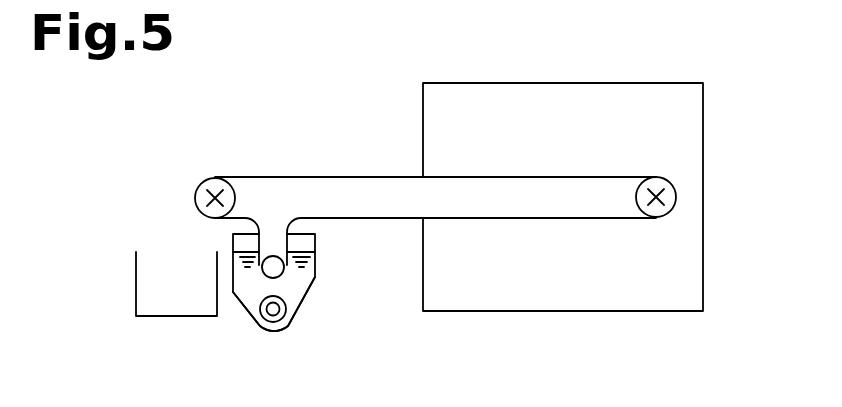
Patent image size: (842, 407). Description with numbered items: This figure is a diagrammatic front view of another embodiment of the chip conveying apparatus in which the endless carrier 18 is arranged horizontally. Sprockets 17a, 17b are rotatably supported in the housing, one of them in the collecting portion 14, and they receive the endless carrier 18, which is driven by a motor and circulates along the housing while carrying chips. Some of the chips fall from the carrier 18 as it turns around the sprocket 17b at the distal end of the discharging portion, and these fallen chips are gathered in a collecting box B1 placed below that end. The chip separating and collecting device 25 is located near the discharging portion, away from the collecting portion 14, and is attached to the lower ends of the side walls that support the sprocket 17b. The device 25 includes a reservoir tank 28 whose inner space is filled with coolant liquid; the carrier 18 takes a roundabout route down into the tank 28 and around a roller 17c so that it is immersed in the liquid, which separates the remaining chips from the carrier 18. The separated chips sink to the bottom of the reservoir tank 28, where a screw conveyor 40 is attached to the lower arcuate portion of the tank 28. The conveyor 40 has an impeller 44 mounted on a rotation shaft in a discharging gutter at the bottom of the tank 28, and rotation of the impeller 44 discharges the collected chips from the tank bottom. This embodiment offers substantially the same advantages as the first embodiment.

The collecting portion 14 is at (591, 176).
The endless carrier 18 is at (358, 177).
The sprocket 17a is at (677, 194).
The sprocket 17b is at (222, 178).
The roller 17c is at (284, 268).
The reservoir tank 28 is at (317, 282).
The chip separating and collecting device 25 is at (313, 304).
The impeller 44 is at (287, 310).
The screw conveyor 40 is at (257, 326).
The collecting box B1 is at (136, 278).